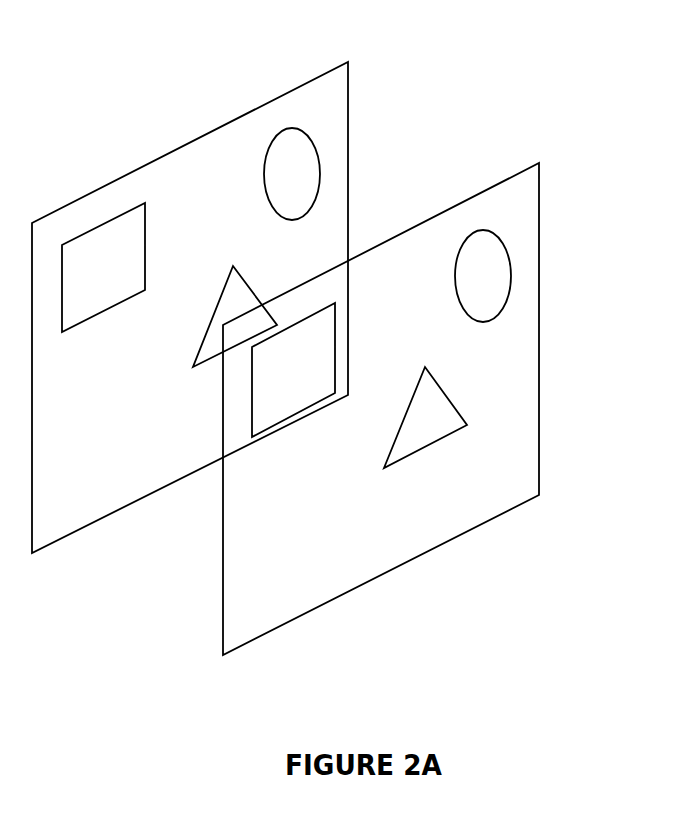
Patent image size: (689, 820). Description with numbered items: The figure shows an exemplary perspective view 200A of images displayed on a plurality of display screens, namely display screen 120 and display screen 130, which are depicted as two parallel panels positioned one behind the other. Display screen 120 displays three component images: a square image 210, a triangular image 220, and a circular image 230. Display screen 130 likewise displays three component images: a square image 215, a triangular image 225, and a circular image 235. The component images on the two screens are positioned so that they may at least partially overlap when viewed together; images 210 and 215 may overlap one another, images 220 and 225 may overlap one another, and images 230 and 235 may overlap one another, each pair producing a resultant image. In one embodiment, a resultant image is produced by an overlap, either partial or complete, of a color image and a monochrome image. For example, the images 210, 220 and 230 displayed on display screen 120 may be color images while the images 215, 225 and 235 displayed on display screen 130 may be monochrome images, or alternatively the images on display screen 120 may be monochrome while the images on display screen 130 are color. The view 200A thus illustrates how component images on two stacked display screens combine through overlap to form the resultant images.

The exemplary perspective view 200A is at (392, 28).
The display screen 120 is at (63, 538).
The display screen 130 is at (257, 640).
The component image 210 is at (120, 280).
The component image 215 is at (315, 381).
The component image 220 is at (240, 298).
The component image 225 is at (413, 433).
The component image 230 is at (308, 177).
The component image 235 is at (500, 278).